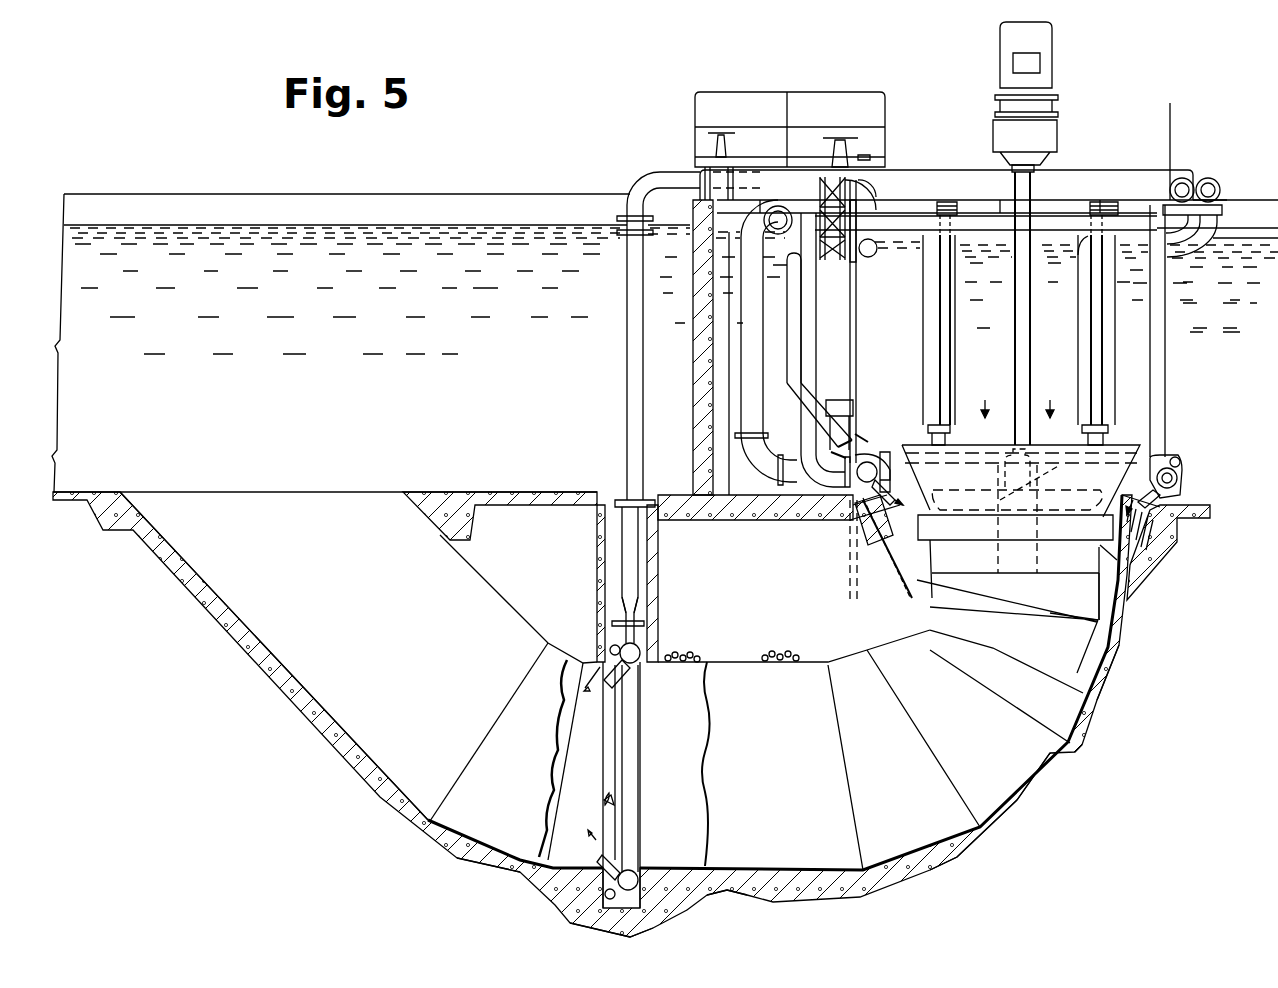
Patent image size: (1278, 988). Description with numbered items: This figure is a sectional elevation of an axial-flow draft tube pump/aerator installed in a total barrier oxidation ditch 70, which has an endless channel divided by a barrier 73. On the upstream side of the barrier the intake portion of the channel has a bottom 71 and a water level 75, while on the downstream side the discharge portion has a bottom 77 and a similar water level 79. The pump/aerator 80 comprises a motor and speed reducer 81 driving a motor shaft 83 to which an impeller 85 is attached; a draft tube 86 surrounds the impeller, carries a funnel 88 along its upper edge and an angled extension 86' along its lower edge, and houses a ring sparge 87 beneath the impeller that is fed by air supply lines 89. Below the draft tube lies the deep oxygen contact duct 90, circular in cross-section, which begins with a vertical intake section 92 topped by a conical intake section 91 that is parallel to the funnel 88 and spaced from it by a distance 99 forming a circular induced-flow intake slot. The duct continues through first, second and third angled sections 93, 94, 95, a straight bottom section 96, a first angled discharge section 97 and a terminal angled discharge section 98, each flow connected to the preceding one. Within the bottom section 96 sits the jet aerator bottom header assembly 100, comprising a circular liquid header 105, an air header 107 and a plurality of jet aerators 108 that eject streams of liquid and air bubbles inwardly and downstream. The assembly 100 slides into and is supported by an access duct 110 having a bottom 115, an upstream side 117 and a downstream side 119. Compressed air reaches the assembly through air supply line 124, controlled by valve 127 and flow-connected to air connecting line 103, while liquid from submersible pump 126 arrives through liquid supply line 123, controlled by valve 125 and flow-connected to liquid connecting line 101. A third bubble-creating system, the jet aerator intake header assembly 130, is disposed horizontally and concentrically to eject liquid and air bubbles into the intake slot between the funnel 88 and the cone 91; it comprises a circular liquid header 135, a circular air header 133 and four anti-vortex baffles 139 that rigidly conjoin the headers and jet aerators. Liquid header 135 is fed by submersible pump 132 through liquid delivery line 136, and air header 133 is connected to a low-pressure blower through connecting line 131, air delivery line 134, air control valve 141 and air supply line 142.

The total barrier oxidation ditch 70 is at (190, 182).
The bottom 71 is at (1190, 510).
The barrier 73 is at (697, 292).
The water level 75 is at (1237, 240).
The bottom 77 is at (445, 494).
The water level 79 is at (382, 225).
The pump/aerator 80 is at (1098, 112).
The motor and speed reducer 81 is at (1000, 75).
The motor shaft 83 is at (1030, 300).
The impeller 85 is at (978, 486).
The draft tube 86 is at (1139, 596).
The angled extension 86' is at (1134, 672).
The ring sparge 87 is at (1125, 568).
The funnel 88 is at (1140, 448).
The air supply lines 89 is at (1079, 306).
The deep oxygen contact duct 90 is at (1072, 777).
The conical intake section 91 is at (905, 572).
The vertical intake section 92 is at (1110, 641).
The first angled section 93 is at (1090, 710).
The second angled section 94 is at (1022, 800).
The third angled section 95 is at (940, 852).
The straight bottom section 96 is at (750, 898).
The first angled discharge section 97 is at (505, 870).
The terminal angled discharge section 98 is at (372, 782).
The distance 99 is at (900, 515).
The jet aerator bottom header assembly 100 is at (685, 745).
The liquid connecting line 101 is at (648, 626).
The air connecting line 103 is at (640, 613).
The circular liquid header 105 is at (641, 652).
The air header 107 is at (610, 648).
The jet aerators 108 is at (633, 670).
The access duct 110 is at (588, 544).
The bottom 115 is at (667, 917).
The upstream side 117 is at (634, 780).
The downstream side 119 is at (606, 805).
The liquid supply line 123 is at (647, 177).
The air supply line 124 is at (626, 343).
The valve 125 is at (726, 140).
The submersible pump 126 is at (778, 476).
The valve 127 is at (848, 137).
The jet aerator intake header assembly 130 is at (878, 439).
The connecting line 131 is at (870, 455).
The submersible pump 132 is at (850, 401).
The circular air header 133 is at (1182, 464).
The air delivery line 134 is at (812, 402).
The circular liquid header 135 is at (1180, 480).
The liquid delivery line 136 is at (741, 328).
The anti-vortex baffles 139 is at (1162, 515).
The air control valve 141 is at (828, 262).
The air supply line 142 is at (870, 254).